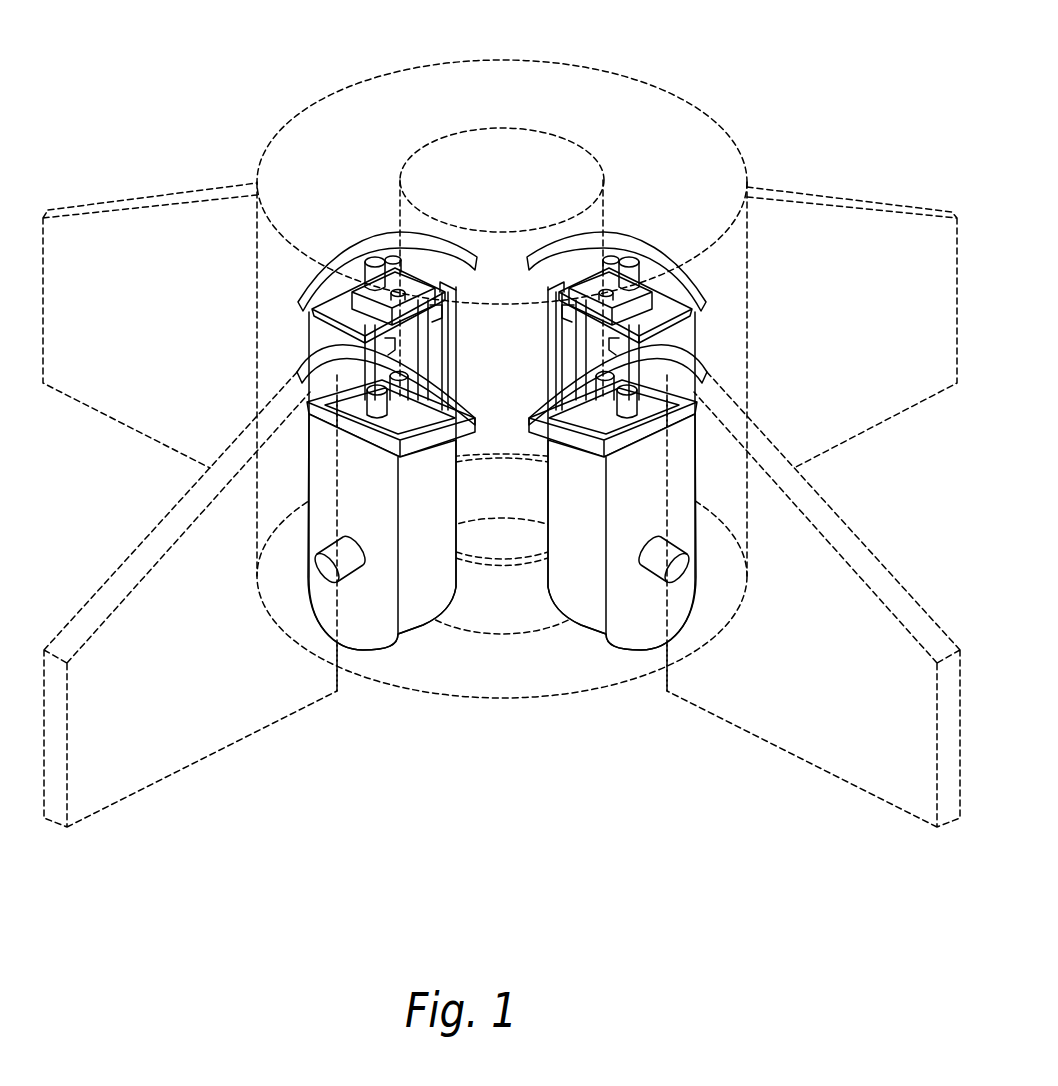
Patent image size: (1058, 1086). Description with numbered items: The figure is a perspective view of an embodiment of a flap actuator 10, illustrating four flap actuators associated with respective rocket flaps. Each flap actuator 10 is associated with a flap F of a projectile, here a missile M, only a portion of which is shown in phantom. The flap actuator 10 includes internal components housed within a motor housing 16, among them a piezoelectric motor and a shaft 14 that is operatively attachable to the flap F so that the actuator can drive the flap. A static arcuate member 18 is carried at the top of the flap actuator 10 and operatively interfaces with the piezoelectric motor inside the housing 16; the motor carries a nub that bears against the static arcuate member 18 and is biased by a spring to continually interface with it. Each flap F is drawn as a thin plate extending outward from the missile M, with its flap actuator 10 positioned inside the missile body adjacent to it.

The flap actuator 10 is at (495, 453).
The shaft 14 is at (653, 660).
The motor housing 16 is at (623, 630).
The static arcuate member 18 is at (365, 245).
The missile M is at (630, 77).
The flap F is at (118, 222).